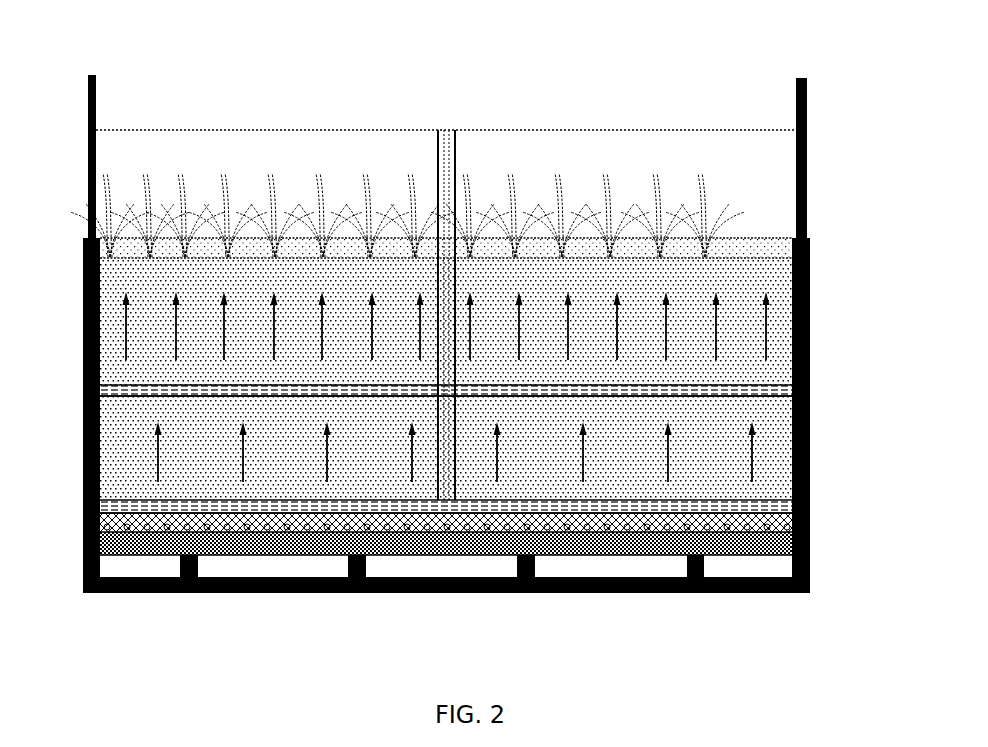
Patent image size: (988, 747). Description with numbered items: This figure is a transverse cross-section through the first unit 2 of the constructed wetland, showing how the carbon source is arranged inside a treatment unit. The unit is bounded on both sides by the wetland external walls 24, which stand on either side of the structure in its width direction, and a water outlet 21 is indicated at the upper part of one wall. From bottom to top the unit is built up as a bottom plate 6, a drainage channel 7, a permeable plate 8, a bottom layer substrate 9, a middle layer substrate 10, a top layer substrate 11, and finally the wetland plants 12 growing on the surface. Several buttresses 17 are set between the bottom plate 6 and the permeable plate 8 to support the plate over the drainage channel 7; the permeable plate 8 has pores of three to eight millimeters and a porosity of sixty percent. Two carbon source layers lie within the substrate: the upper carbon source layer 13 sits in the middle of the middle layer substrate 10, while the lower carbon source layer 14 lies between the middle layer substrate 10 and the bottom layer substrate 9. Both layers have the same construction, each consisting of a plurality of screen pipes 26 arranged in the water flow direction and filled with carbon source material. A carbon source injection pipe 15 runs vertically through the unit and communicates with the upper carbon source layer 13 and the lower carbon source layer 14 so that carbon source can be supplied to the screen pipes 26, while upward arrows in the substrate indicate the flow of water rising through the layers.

The first unit 2 is at (590, 165).
The bottom plate 6 is at (728, 593).
The drainage channel 7 is at (155, 558).
The permeable plate 8 is at (280, 548).
The bottom layer substrate 9 is at (163, 530).
The middle layer substrate 10 is at (128, 292).
The top layer substrate 11 is at (140, 250).
The wetland plant 12 is at (232, 187).
The upper carbon source layer 13 is at (138, 388).
The lower carbon source layer 14 is at (168, 507).
The carbon source injection pipe 15 is at (455, 130).
The buttress 17 is at (366, 558).
The water outlet 21 is at (823, 105).
The wetland external wall 24 is at (828, 387).
The screen pipe 26 is at (508, 515).